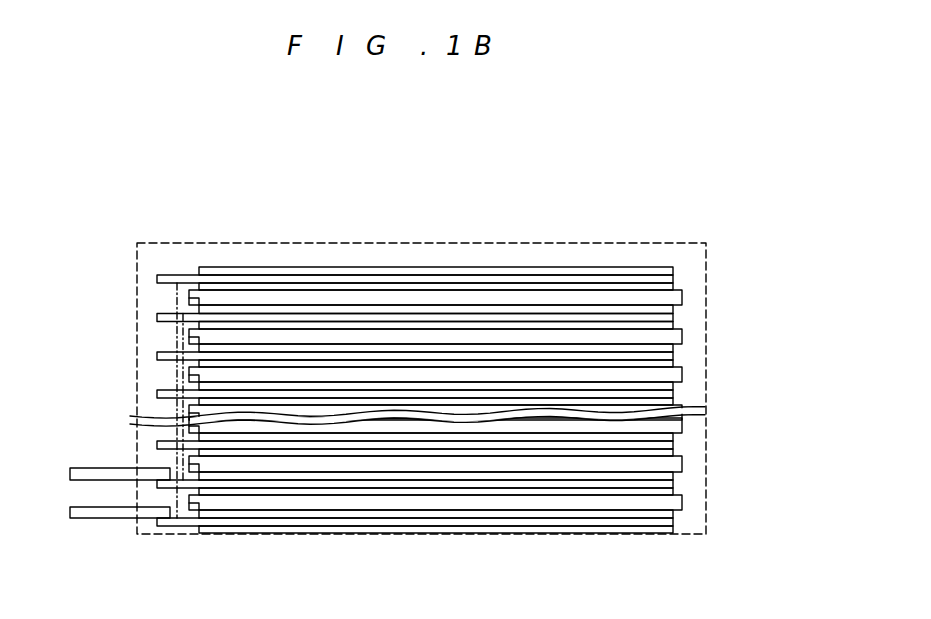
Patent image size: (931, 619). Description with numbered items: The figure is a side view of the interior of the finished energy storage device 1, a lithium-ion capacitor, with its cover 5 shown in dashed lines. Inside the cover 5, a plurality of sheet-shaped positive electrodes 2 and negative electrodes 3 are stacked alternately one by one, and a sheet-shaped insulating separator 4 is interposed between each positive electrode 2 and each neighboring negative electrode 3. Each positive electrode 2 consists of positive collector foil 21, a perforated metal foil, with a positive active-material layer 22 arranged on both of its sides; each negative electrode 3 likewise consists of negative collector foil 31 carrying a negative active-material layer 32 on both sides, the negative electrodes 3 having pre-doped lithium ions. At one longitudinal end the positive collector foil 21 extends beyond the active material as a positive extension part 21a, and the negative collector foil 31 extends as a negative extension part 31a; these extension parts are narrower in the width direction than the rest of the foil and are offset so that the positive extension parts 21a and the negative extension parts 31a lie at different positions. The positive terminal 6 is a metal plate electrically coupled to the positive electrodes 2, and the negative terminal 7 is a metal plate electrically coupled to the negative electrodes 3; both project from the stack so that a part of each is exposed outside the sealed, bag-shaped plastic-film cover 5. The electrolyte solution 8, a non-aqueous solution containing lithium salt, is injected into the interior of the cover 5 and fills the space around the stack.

The finished energy storage device 1 is at (720, 232).
The positive electrode 2 is at (393, 400).
The negative electrode 3 is at (418, 418).
The separator 4 is at (189, 297).
The cover 5 is at (403, 242).
The positive terminal 6 is at (97, 466).
The negative terminal 7 is at (108, 520).
The electrolyte solution 8 is at (550, 262).
The positive collector foil 21 is at (385, 403).
The positive extension part 21a is at (165, 483).
The positive active-material layer 22 is at (673, 308).
The negative collector foil 31 is at (456, 437).
The negative extension part 31a is at (180, 526).
The negative active-material layer 32 is at (673, 432).